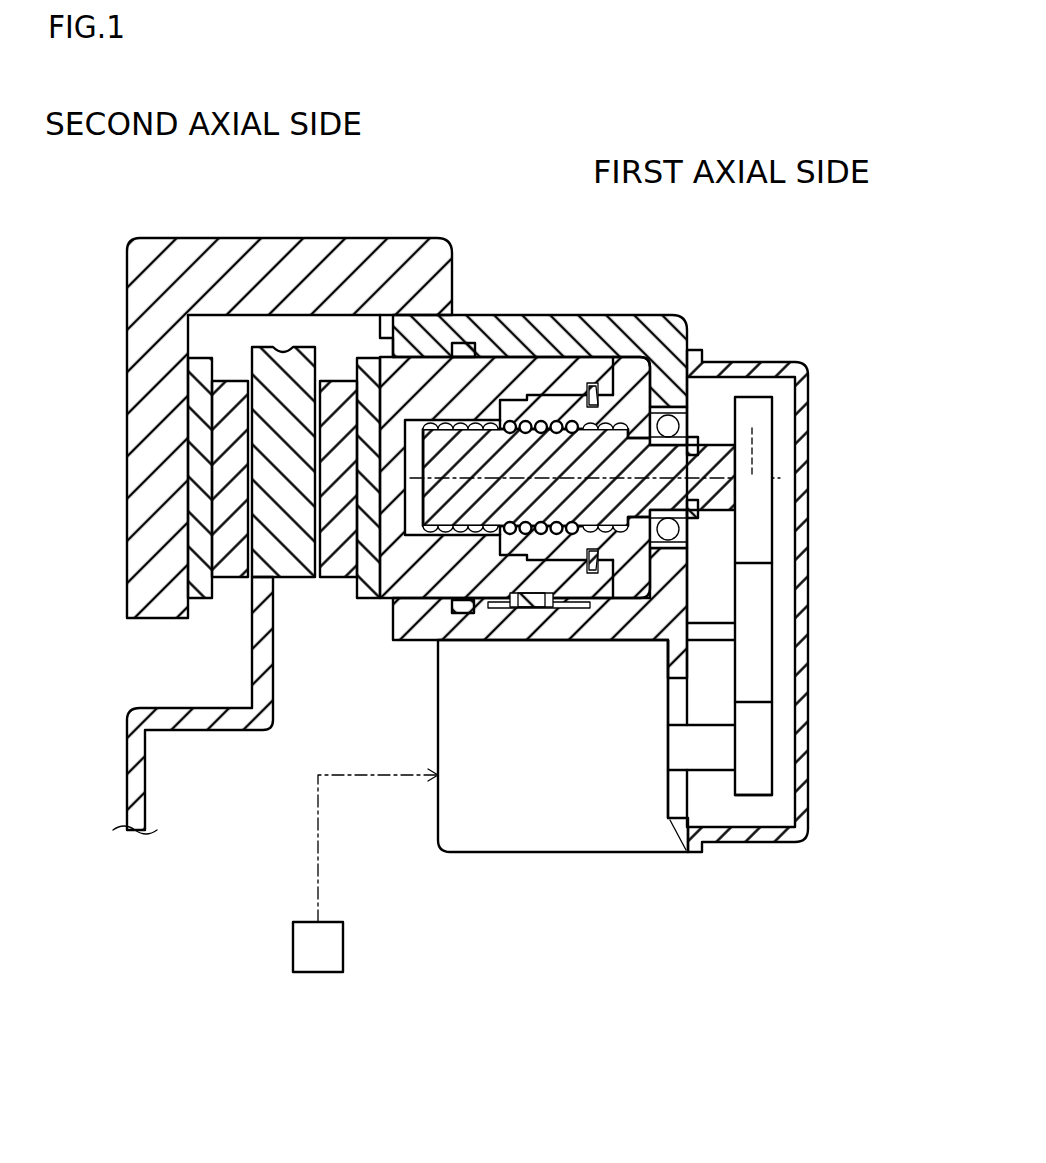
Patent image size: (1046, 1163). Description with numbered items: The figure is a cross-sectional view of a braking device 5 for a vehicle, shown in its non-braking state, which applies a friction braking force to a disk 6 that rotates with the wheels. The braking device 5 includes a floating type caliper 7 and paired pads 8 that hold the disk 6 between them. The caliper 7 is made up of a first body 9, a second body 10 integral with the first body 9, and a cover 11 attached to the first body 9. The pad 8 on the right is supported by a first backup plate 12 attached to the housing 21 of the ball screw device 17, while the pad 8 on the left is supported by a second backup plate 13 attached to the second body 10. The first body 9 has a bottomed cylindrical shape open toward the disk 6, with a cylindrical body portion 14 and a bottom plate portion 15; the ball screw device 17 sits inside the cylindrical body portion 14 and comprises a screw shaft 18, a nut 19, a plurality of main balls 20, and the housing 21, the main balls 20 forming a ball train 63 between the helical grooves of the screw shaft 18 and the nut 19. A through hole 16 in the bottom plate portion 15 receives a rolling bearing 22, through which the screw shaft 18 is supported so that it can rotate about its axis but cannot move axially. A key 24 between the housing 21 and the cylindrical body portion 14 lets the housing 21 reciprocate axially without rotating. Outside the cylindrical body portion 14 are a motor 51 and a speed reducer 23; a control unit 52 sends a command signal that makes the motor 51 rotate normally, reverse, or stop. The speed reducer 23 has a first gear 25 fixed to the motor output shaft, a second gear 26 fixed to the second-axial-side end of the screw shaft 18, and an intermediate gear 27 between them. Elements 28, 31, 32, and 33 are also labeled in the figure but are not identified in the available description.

The braking device 5 is at (775, 540).
The disk 6 is at (286, 362).
The floating type caliper 7 is at (289, 374).
The pads 8 is at (229, 402).
The first body 9 is at (542, 514).
The second body 10 is at (330, 228).
The cover 11 is at (776, 368).
The first backup plate 12 is at (372, 388).
The second backup plate 13 is at (200, 385).
The cylindrical body portion 14 is at (541, 335).
The bottom plate portion 15 is at (668, 380).
The through hole 16 is at (687, 540).
The ball screw device 17 is at (486, 355).
The screw shaft 18 is at (632, 455).
The nut 19 is at (557, 420).
The main balls 20 is at (569, 408).
The housing 21 is at (425, 388).
The rolling bearing 22 is at (682, 428).
The speed reducer 23 is at (799, 596).
The key 24 is at (528, 610).
The first gear 25 is at (757, 768).
The second gear 26 is at (757, 535).
The intermediate gear 27 is at (757, 673).
The snap ring 28 is at (600, 556).
The lower housing portion 31 is at (415, 580).
The housing wall 32 is at (387, 500).
The housing flange portion 33 is at (393, 612).
The motor 51 is at (553, 867).
The control unit 52 is at (343, 947).
The ball train 63 is at (518, 540).